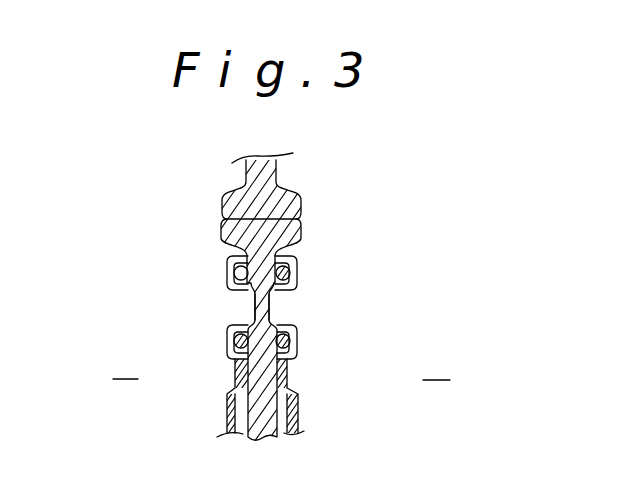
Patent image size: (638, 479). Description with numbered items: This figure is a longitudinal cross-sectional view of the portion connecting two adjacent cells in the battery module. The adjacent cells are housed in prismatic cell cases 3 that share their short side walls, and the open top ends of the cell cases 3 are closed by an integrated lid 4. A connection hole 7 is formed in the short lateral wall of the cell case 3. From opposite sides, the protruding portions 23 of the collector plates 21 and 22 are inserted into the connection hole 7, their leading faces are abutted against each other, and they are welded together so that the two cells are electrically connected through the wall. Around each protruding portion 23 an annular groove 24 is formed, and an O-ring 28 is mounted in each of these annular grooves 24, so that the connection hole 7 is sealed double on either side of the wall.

The cell case 3 is at (281, 362).
The integrated lid 4 is at (263, 173).
The connection hole 7 is at (285, 326).
The collector plate 21 is at (227, 408).
The collector plate 22 is at (300, 414).
The protruding portion 23 is at (254, 296).
The annular groove 24 is at (228, 255).
The O-ring 28 is at (234, 273).